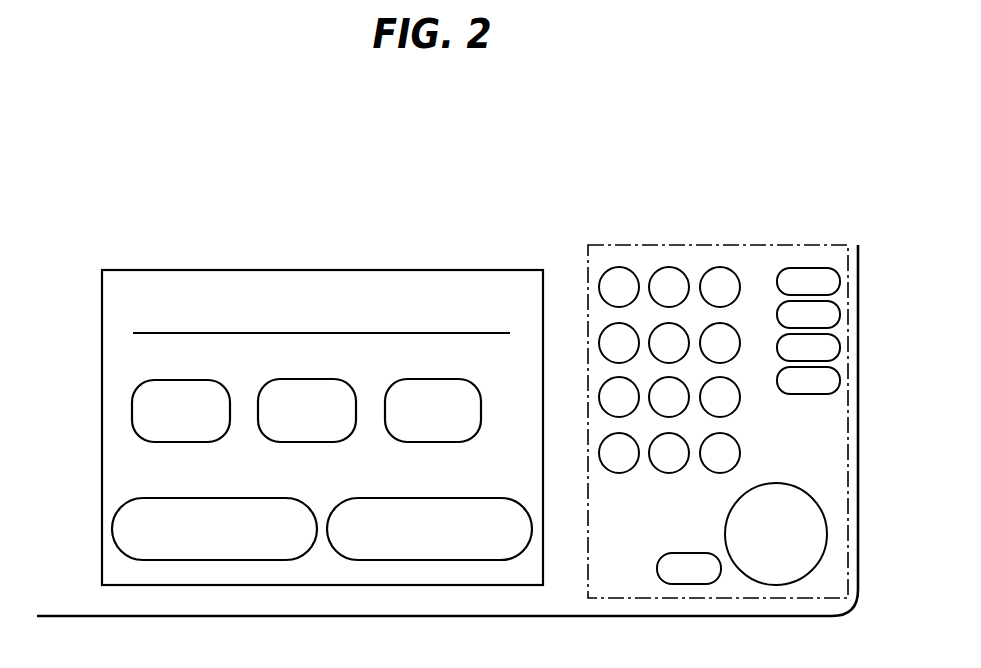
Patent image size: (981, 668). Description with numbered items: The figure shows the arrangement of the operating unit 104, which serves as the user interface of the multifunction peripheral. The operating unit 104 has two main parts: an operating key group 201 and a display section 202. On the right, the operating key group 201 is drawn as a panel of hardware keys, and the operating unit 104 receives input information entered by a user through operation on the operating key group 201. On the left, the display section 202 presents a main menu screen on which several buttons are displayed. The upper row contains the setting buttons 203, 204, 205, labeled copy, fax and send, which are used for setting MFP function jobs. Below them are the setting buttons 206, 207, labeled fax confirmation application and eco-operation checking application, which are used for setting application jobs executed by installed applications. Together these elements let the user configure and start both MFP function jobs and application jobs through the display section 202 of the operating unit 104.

The operating unit 104 is at (801, 118).
The operating key group 201 is at (793, 243).
The display section 202 is at (490, 270).
The setting button 203 is at (224, 384).
The setting button 204 is at (350, 384).
The setting button 205 is at (478, 384).
The setting button 206 is at (267, 498).
The setting button 207 is at (480, 498).